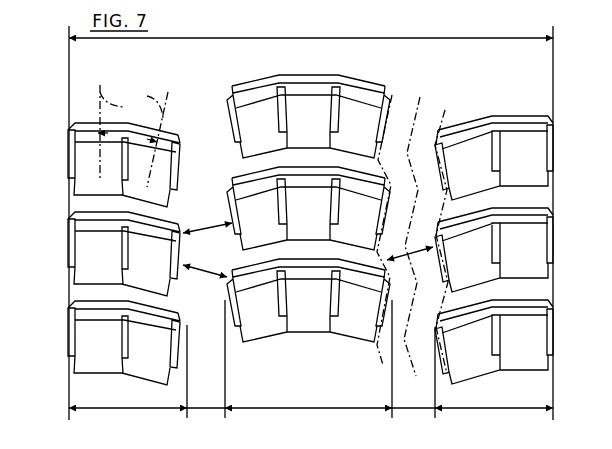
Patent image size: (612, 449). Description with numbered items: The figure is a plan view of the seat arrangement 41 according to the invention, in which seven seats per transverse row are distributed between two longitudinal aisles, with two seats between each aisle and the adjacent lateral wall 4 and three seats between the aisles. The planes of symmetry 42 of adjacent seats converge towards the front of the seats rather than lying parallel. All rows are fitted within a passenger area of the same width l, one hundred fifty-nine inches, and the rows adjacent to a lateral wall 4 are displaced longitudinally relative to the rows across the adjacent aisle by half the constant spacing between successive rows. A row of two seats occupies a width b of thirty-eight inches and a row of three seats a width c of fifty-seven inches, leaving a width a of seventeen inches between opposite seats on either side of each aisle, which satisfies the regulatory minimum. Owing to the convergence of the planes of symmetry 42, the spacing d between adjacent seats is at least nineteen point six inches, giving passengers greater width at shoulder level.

The seat arrangement 41 is at (65, 121).
The planes of symmetry 42 is at (134, 136).
The lateral wall 4 is at (68, 300).
The aisle width between opposite seats a is at (308, 242).
The width of a row of two seats b is at (311, 371).
The width of a row of three seats c is at (311, 359).
The spacing between planes of symmetry of adjacent seats d is at (124, 165).
The width of the passenger area l is at (311, 28).